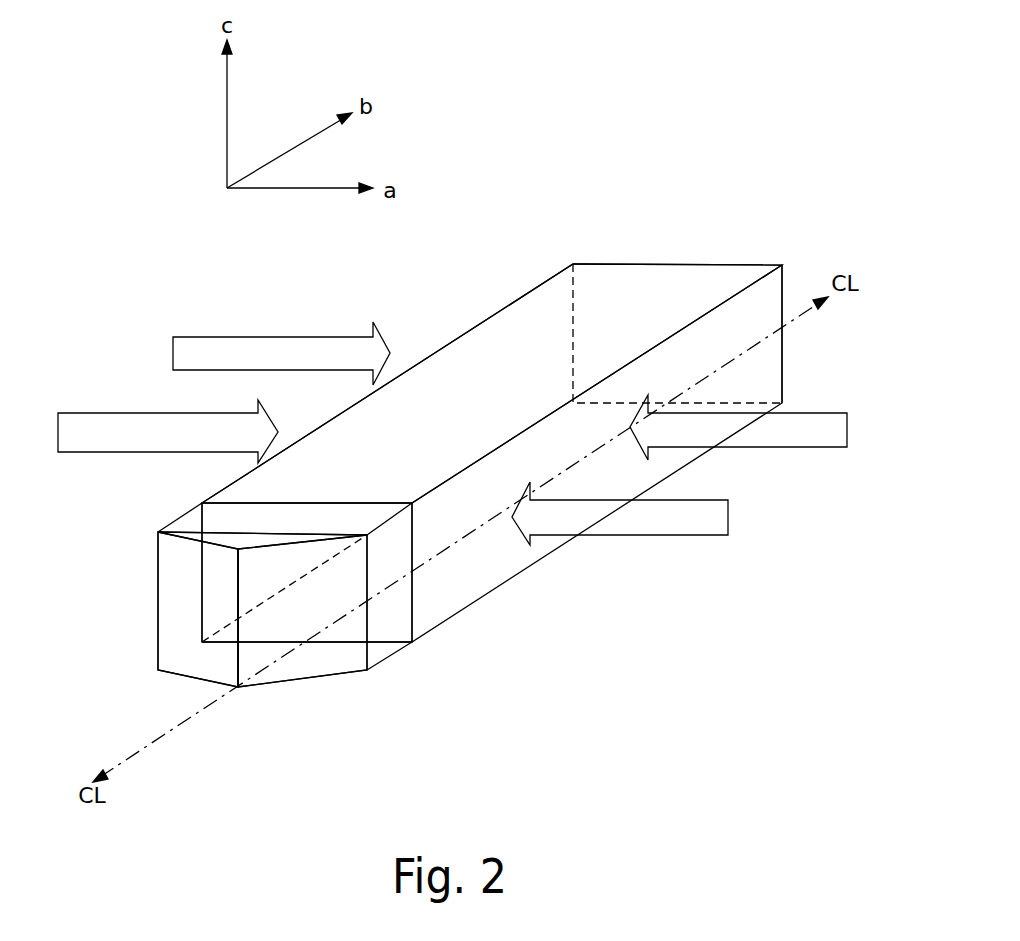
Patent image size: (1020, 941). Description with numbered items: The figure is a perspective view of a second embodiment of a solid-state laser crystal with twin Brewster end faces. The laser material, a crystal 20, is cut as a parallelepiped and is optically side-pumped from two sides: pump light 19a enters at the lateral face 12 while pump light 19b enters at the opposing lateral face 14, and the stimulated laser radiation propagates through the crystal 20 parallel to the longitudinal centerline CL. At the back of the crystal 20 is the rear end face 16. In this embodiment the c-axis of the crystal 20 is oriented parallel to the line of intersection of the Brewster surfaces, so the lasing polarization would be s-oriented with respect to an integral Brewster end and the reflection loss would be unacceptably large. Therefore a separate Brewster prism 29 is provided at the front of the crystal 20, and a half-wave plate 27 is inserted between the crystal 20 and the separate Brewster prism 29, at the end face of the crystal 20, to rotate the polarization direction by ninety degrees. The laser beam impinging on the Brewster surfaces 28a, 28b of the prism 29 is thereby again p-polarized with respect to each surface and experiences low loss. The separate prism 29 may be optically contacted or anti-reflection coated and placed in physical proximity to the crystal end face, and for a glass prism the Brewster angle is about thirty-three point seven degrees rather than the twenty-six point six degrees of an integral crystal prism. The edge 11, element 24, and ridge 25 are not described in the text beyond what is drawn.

The top surface of gain medium 11 is at (552, 292).
The lateral face 12 is at (470, 338).
The lateral face 14 is at (773, 375).
The rear end face 16 is at (692, 268).
The pump light 19a is at (210, 337).
The pump light 19b is at (848, 450).
The crystal 20 is at (552, 586).
The end prism 24 is at (393, 655).
The prism ridge 25 is at (240, 655).
The half-wave plate 27 is at (400, 607).
The Brewster surface 28a is at (215, 577).
The Brewster surface 28b is at (340, 662).
The separate Brewster prism 29 is at (217, 532).